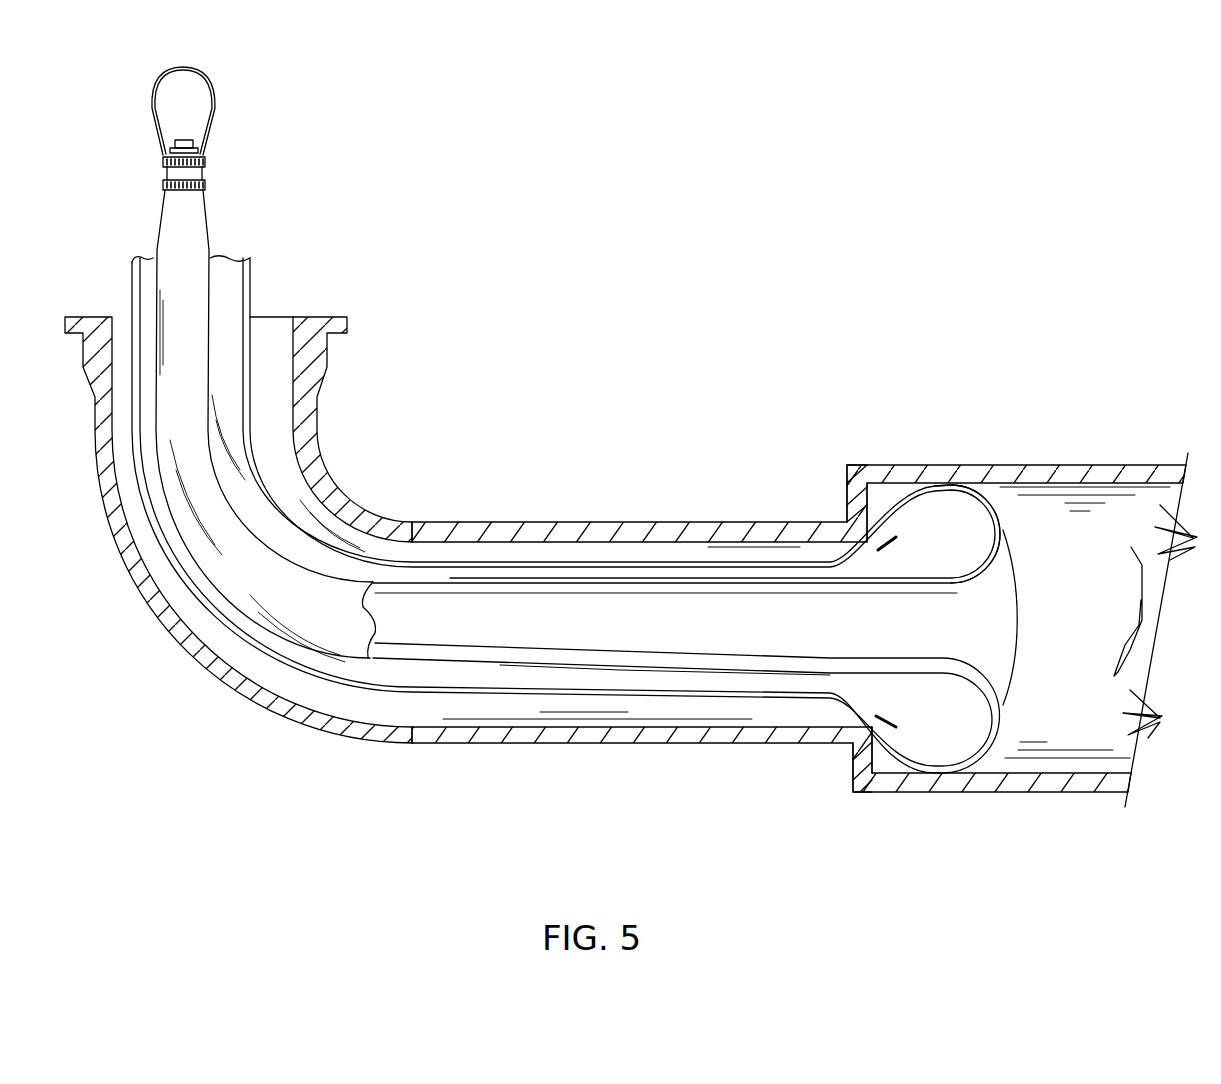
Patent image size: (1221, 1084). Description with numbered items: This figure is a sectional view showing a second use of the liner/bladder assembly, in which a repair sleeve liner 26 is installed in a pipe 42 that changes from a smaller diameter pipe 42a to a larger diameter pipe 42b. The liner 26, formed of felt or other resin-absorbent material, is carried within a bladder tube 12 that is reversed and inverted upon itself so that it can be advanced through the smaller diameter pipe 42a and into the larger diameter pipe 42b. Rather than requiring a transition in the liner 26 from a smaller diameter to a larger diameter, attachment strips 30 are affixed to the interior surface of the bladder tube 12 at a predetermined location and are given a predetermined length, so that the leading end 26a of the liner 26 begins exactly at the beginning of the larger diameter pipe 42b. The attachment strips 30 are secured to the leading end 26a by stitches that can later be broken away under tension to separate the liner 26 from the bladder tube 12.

The bladder tube 12 is at (272, 478).
The repair sleeve liner 26 is at (825, 615).
The leading end 26a is at (950, 483).
The attachment strips 30 is at (905, 517).
The pipe 42 is at (857, 458).
The smaller diameter pipe 42a is at (493, 521).
The larger diameter pipe 42b is at (1020, 460).